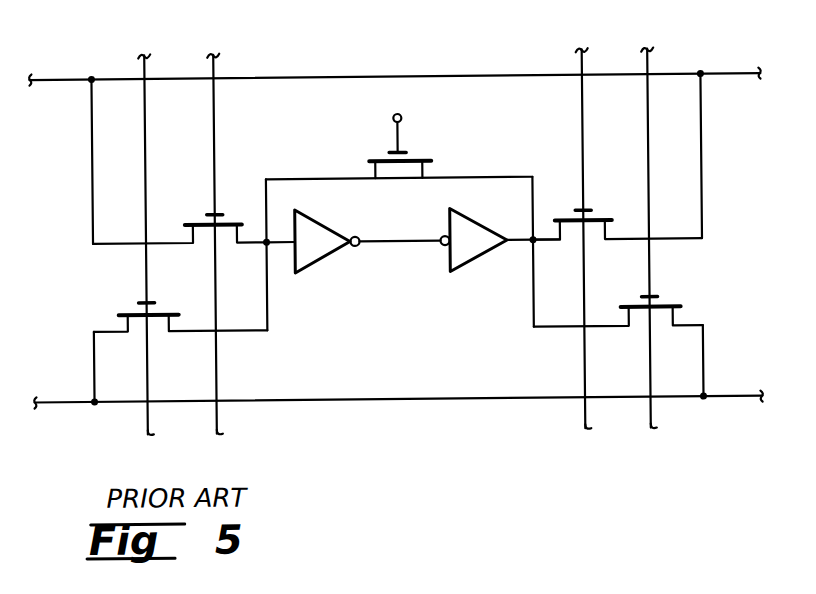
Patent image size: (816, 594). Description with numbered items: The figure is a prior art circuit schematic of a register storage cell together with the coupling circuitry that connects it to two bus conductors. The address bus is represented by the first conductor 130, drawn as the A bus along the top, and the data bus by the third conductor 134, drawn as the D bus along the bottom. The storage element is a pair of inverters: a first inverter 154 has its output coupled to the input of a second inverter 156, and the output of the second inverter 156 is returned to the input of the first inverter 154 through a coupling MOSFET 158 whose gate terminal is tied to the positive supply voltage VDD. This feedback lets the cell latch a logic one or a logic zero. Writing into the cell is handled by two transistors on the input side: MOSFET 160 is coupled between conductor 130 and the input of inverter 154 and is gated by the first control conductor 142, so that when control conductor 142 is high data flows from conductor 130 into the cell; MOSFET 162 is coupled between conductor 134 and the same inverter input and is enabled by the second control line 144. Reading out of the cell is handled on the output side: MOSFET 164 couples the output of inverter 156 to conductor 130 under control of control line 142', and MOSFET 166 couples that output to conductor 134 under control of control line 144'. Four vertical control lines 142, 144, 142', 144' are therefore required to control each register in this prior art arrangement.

The first conductor 130 is at (330, 80).
The third conductor 134 is at (461, 401).
The first control conductor 142 is at (244, 233).
The control line 142' is at (554, 228).
The second control line 144 is at (115, 234).
The control line 144' is at (679, 226).
The first inverter 154 is at (333, 229).
The second inverter 156 is at (487, 228).
The coupling MOSFET 158 is at (391, 155).
The MOSFET 160 is at (192, 222).
The MOSFET 162 is at (125, 311).
The MOSFET 164 is at (597, 218).
The MOSFET 166 is at (668, 307).